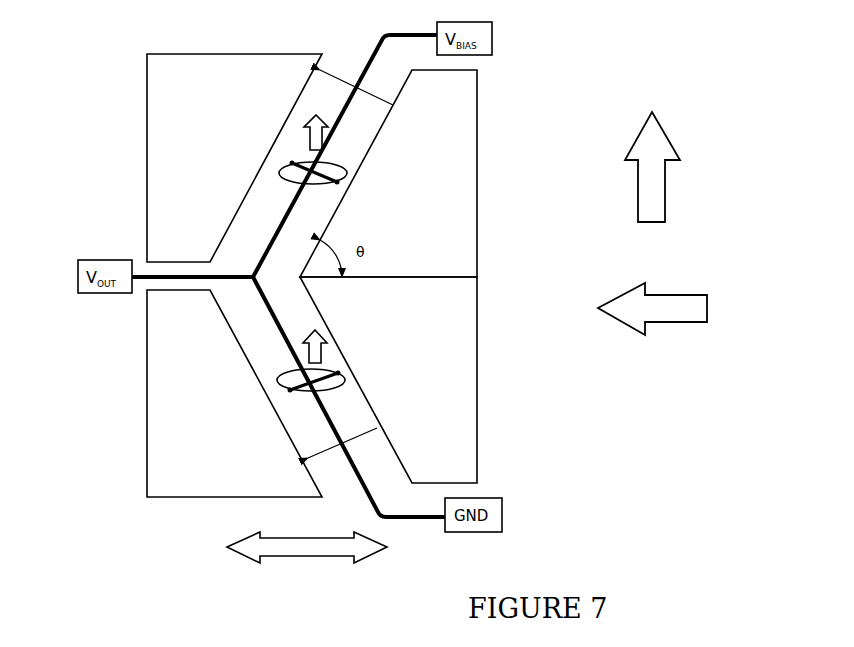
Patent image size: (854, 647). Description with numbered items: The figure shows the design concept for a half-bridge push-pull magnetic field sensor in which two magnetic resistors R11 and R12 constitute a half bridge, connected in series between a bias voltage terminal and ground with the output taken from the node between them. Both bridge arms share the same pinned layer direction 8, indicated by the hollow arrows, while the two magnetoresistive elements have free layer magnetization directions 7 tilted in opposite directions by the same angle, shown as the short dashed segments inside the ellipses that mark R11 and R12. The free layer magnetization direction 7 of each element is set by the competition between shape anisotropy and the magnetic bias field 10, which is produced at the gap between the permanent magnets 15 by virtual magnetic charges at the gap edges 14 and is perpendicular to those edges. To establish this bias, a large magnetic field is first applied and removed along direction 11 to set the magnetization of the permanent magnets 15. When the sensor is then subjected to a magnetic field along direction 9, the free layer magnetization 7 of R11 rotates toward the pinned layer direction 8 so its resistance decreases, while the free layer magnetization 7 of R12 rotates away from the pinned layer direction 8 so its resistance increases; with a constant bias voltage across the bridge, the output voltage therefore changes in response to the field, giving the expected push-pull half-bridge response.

The free layer magnetization direction 7 is at (323, 183).
The pinned layer direction 8 is at (308, 123).
The magnetic field direction 9 is at (307, 547).
The magnetic bias field 10 is at (345, 78).
The permanent magnet setting field direction 11 is at (660, 310).
The gap edges 14 is at (227, 228).
The permanent magnets 15 is at (460, 318).
The magnetic resistor R11 is at (330, 162).
The magnetic resistor R12 is at (287, 370).